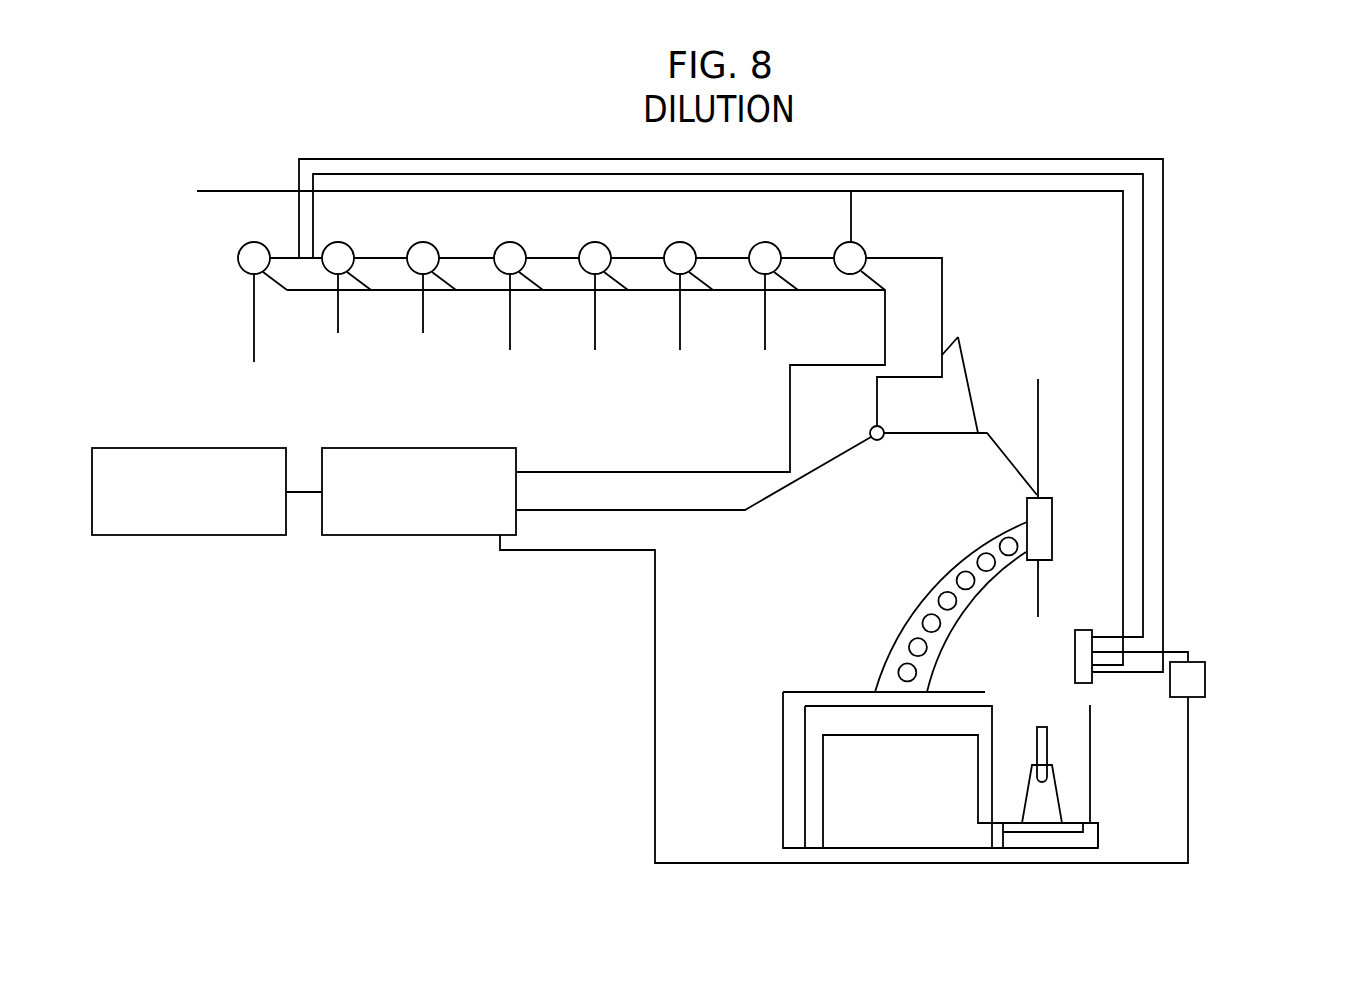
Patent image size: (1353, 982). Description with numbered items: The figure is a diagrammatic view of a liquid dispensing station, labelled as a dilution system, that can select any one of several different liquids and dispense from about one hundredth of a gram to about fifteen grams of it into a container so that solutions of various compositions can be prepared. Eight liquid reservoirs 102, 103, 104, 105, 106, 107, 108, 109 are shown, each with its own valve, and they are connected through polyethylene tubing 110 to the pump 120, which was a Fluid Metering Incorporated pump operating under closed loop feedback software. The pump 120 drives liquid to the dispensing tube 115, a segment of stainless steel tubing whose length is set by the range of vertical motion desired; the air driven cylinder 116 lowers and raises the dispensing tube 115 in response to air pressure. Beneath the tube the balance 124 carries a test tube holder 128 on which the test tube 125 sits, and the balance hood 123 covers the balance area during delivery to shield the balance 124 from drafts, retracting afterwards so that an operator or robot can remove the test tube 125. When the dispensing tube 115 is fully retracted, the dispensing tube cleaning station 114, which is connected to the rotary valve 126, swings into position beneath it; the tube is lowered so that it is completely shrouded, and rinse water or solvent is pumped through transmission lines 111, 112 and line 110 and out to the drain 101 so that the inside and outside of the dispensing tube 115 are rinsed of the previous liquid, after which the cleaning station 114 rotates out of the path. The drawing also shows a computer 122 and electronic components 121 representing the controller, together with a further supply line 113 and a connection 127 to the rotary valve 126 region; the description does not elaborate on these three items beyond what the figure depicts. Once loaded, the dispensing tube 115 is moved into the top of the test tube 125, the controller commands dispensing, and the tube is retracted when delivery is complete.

The drain 101 is at (112, 197).
The liquid reservoir 102 is at (242, 247).
The liquid reservoir 103 is at (338, 242).
The liquid reservoir 104 is at (423, 242).
The liquid reservoir 105 is at (510, 242).
The liquid reservoir 106 is at (595, 242).
The liquid reservoir 107 is at (680, 242).
The liquid reservoir 108 is at (765, 242).
The liquid reservoir 109 is at (861, 246).
The polyethylene tubing 110 is at (958, 337).
The transmission line 111 is at (1163, 245).
The transmission line 112 is at (1143, 360).
The drain line 113 is at (1123, 308).
The dispensing tube cleaning station 114 is at (1075, 657).
The dispensing tube 115 is at (1038, 598).
The air driven cylinder 116 is at (1038, 452).
The pump 120 is at (883, 424).
The electronic components 121 is at (395, 535).
The computer 122 is at (157, 535).
The balance hood 123 is at (840, 749).
The balance 124 is at (1083, 832).
The test tube 125 is at (1048, 742).
The rotary valve 126 is at (1198, 662).
The connecting line 127 is at (1170, 653).
The test tube holder 128 is at (1055, 795).